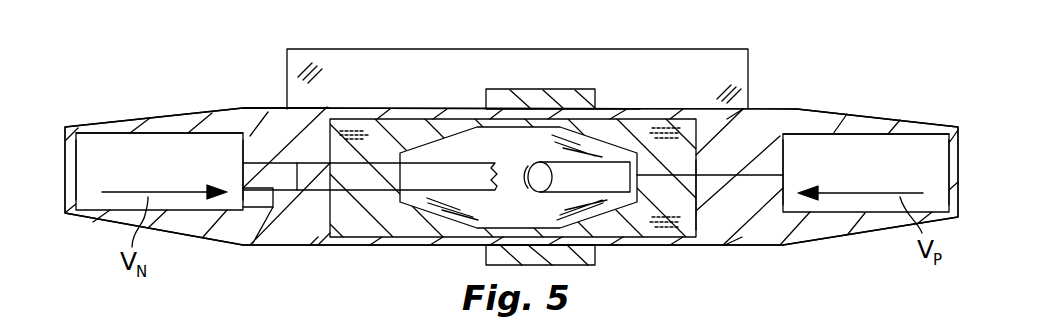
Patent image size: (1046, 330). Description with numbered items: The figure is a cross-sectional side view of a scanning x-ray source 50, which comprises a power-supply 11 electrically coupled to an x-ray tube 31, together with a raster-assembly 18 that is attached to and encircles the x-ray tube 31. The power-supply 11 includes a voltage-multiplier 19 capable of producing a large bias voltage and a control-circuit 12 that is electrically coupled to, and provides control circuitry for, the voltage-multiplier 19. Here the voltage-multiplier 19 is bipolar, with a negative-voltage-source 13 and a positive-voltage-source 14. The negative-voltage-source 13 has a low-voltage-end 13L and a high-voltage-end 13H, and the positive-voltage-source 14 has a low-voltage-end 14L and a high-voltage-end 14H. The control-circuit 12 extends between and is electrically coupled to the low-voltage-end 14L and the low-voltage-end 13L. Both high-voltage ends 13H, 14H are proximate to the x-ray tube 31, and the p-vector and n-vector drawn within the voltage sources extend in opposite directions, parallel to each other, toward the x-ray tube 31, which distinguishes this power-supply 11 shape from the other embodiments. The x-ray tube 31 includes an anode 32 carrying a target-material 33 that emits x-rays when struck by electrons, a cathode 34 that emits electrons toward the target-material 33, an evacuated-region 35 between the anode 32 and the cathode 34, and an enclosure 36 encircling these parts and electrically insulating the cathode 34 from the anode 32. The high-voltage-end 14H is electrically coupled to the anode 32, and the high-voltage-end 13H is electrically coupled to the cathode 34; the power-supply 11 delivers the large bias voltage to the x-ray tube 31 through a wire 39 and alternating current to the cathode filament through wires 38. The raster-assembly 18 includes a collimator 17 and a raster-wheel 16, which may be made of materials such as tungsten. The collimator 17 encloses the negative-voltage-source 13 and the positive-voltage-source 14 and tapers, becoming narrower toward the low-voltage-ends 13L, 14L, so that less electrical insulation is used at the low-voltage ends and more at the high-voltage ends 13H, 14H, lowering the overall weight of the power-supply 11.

The scanning x-ray source 50 is at (169, 45).
The power-supply 11 is at (200, 263).
The control-circuit 12 is at (417, 94).
The negative-voltage-source 13 is at (148, 181).
The low-voltage-end of the negative-voltage-source 13L is at (98, 165).
The high-voltage-end of the negative-voltage-source 13H is at (235, 176).
The positive-voltage-source 14 is at (853, 180).
The high-voltage-end of the positive-voltage-source 14H is at (806, 167).
The low-voltage-end of the positive-voltage-source 14L is at (947, 176).
The raster-wheel 16 is at (545, 95).
The collimator 17 is at (282, 141).
The raster-assembly 18 is at (628, 91).
The voltage-multiplier 19 is at (153, 141).
The x-ray tube 31 is at (726, 210).
The anode 32 is at (573, 190).
The target-material 33 is at (529, 178).
The cathode 34 is at (490, 173).
The evacuated-region 35 is at (512, 180).
The enclosure 36 is at (343, 225).
The wires 38 is at (313, 190).
The wire 39 is at (258, 207).